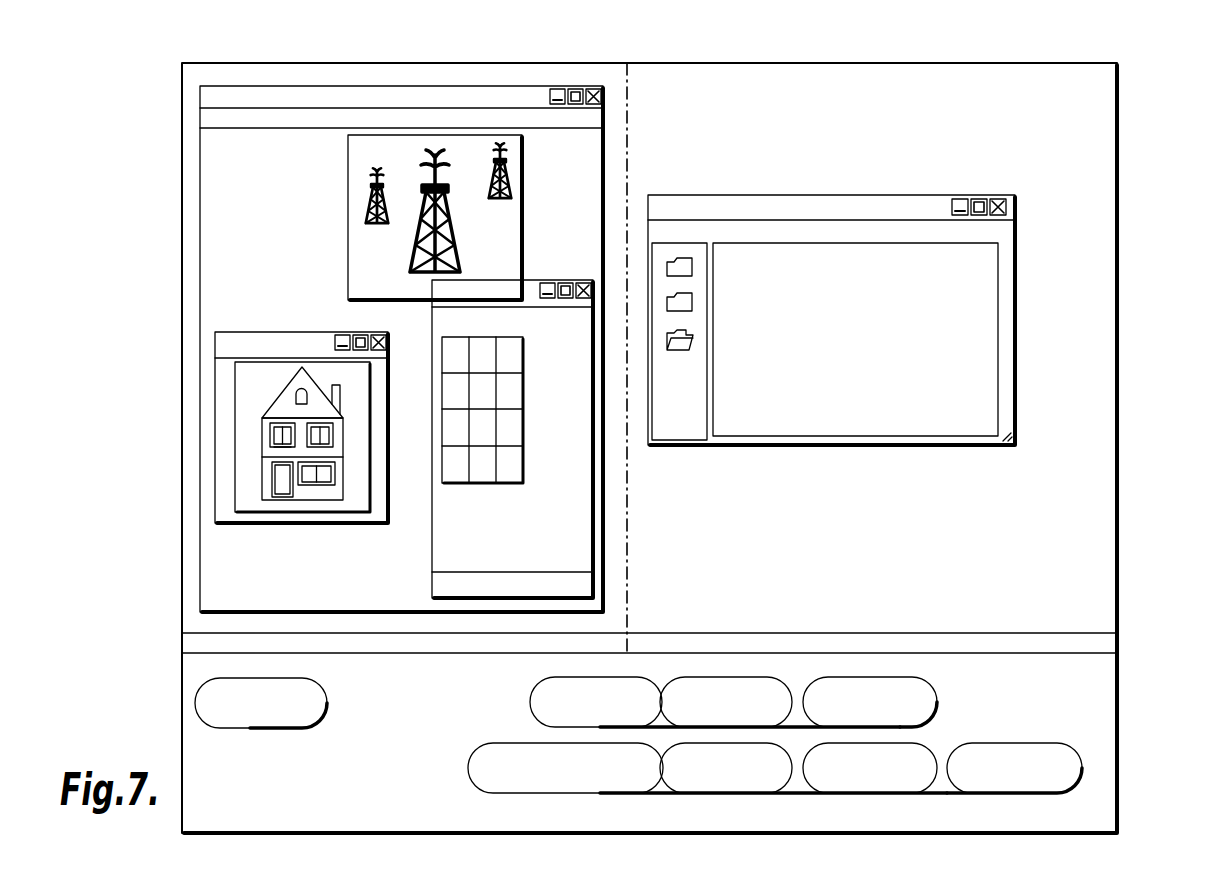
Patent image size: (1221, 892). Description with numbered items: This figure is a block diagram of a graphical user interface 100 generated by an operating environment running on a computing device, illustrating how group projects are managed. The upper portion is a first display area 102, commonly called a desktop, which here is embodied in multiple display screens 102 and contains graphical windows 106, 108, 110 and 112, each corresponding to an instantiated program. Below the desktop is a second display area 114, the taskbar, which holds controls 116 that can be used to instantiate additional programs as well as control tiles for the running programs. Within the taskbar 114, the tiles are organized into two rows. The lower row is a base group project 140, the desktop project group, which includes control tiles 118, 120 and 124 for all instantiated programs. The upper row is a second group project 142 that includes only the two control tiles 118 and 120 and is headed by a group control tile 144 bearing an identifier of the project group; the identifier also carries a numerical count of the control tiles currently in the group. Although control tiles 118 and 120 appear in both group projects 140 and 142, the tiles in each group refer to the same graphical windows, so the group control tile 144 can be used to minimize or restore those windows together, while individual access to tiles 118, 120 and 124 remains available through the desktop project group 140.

The graphical user interface 100 is at (1130, 119).
The first display area 102 is at (197, 76).
The graphical window 106 is at (301, 181).
The graphical window 108 is at (296, 527).
The graphical window 110 is at (532, 542).
The graphical window 112 is at (849, 342).
The second display area 114 is at (1087, 688).
The controls 116 is at (261, 703).
The control tile 118 is at (726, 735).
The control tile 120 is at (870, 735).
The control tile 124 is at (1014, 768).
The base group project 140 is at (803, 795).
The second group project 142 is at (733, 677).
The group control tile 144 is at (532, 697).